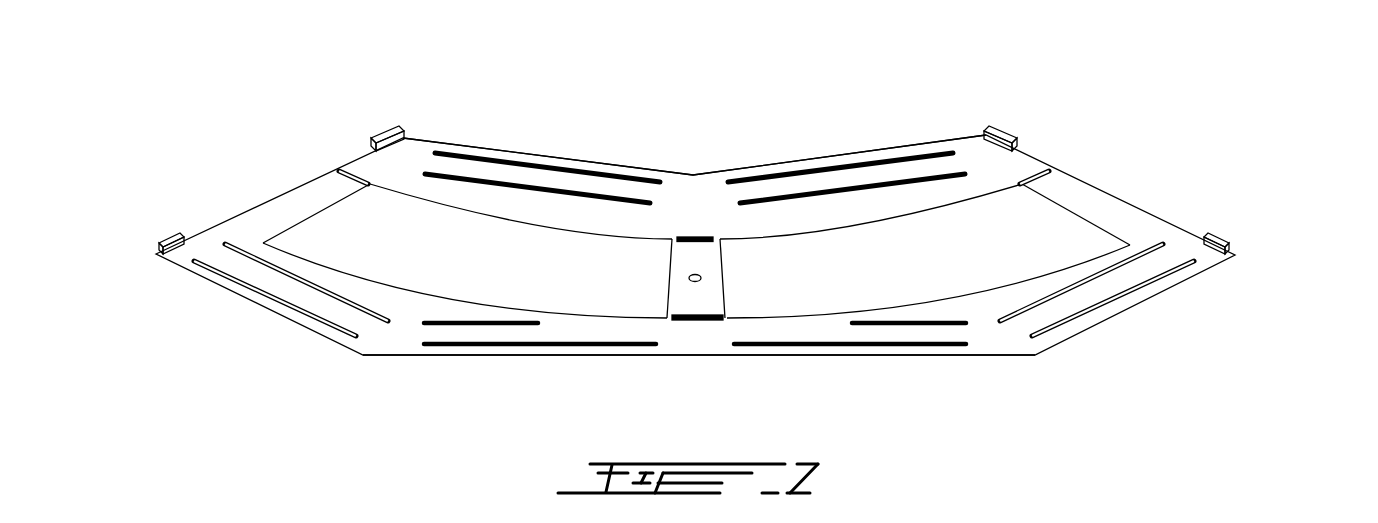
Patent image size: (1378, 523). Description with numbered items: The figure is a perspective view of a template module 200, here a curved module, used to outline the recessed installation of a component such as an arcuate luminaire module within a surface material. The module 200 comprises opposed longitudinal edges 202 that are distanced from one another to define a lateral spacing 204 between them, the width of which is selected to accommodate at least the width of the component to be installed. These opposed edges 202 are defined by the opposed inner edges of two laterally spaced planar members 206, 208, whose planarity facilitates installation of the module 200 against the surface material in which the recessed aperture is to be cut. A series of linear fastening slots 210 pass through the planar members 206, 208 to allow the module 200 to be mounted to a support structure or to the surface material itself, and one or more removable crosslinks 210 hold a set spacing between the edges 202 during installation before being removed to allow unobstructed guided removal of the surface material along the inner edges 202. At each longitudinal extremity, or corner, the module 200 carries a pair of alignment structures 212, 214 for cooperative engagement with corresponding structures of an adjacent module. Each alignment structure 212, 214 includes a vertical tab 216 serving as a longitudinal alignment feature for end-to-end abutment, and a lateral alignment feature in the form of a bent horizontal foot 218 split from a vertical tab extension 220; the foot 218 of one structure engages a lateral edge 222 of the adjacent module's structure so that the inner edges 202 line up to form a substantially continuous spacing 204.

The module 200 is at (748, 105).
The longitudinal edges 202 is at (1067, 265).
The lateral spacing 204 is at (330, 222).
The planar member 206 is at (692, 192).
The planar member 208 is at (700, 337).
The fastening slots 210 is at (327, 187).
The alignment structure 212 is at (852, 190).
The alignment structure 214 is at (672, 208).
The vertical tab 216 is at (386, 152).
The horizontal foot 218 is at (380, 135).
The vertical tab extension 220 is at (158, 240).
The lateral edge 222 is at (168, 233).